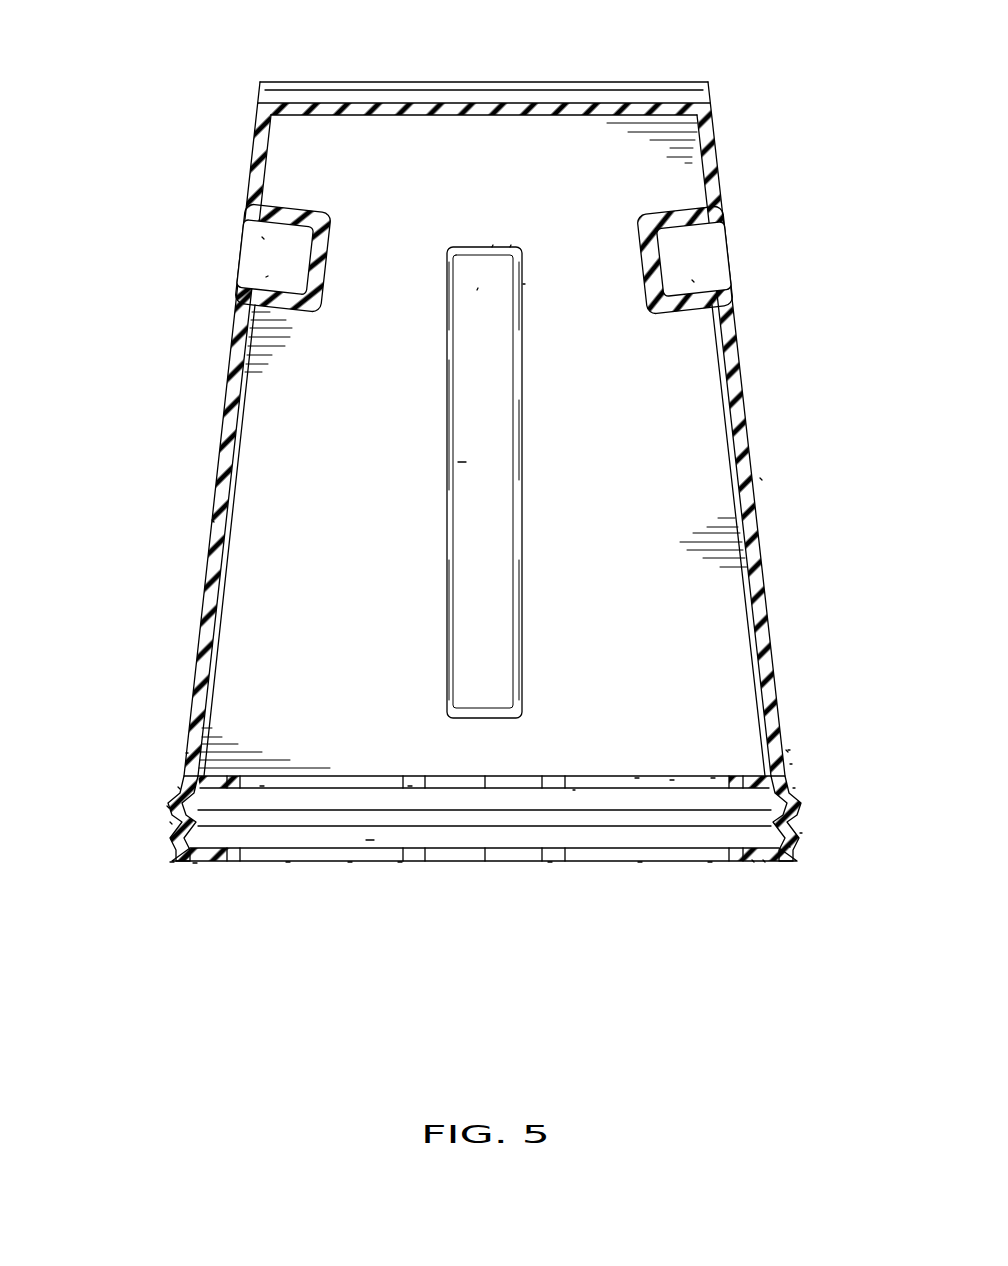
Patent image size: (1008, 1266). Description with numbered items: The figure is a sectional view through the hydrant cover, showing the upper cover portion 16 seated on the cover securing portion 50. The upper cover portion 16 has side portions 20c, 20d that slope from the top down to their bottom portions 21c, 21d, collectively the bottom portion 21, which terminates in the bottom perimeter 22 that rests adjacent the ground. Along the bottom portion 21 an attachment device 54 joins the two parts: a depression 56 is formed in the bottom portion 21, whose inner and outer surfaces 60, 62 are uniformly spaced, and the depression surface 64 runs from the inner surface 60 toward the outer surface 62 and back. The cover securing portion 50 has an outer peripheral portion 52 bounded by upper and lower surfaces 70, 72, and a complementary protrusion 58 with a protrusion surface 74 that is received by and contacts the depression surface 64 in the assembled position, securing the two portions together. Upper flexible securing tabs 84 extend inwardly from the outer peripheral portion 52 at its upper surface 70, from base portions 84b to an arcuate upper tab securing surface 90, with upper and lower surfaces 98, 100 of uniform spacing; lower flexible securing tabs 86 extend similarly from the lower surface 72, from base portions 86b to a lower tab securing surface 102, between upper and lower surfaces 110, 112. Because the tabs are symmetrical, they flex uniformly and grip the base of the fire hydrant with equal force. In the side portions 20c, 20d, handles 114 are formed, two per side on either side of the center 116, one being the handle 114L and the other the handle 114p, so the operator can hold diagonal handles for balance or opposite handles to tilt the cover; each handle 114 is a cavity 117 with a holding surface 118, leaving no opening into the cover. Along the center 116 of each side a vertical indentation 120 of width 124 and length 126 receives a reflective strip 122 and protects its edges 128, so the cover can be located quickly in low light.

The upper cover portion 16 is at (757, 416).
The side portion 20c is at (212, 523).
The side portion 20d is at (760, 478).
The bottom portion 21 is at (790, 764).
The bottom portion 21c is at (178, 787).
The bottom portion 21d is at (793, 788).
The bottom perimeter 22 is at (172, 862).
The cover securing portion 50 is at (750, 862).
The outer peripheral portion 52 is at (790, 845).
The attachment device 54 is at (126, 804).
The depression 56 is at (167, 806).
The protrusion 58 is at (170, 822).
The inner surface 60 is at (790, 750).
The outer surface 62 is at (788, 750).
The depression surface 64 is at (802, 818).
The upper surface 70 is at (188, 753).
The lower surface 72 is at (195, 863).
The protrusion surface 74 is at (800, 833).
The upper flexible securing tabs 84 is at (637, 778).
The base portions 84b is at (262, 786).
The lower flexible securing tabs 86 is at (350, 863).
The base portions 86b is at (288, 863).
The upper tab securing surface 90 is at (410, 785).
The upper surface 98 is at (672, 780).
The lower surface 100 is at (573, 790).
The lower tab securing surface 102 is at (550, 863).
The upper surface 110 is at (370, 842).
The lower surface 112 is at (400, 863).
The handles 114 is at (712, 262).
The handle 114L is at (692, 280).
The hinge pin 114p is at (260, 275).
The center 116 is at (493, 153).
The cavity 117 is at (305, 262).
The holding surface 118 is at (265, 236).
The indentations 120 is at (492, 247).
The reflective strips 122 is at (477, 290).
The width 124 is at (510, 247).
The length 126 is at (523, 284).
The edges 128 is at (460, 462).